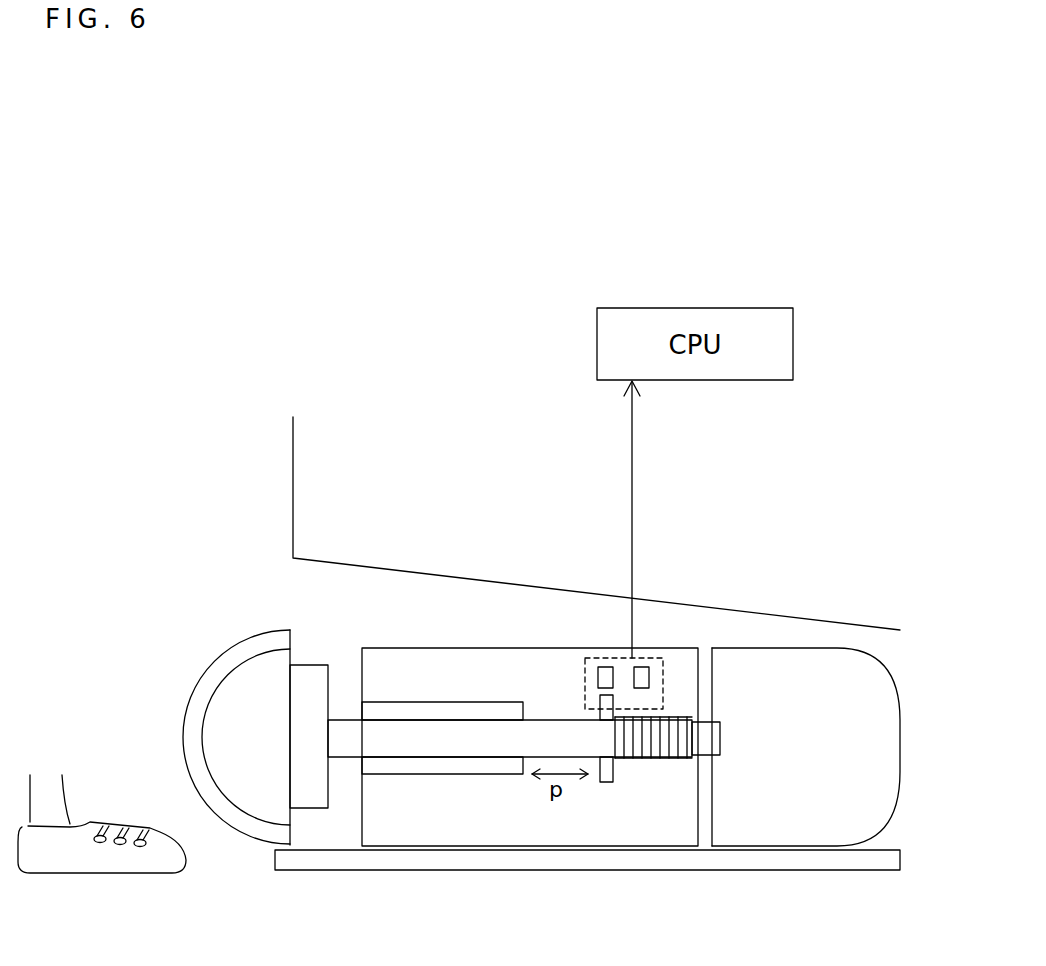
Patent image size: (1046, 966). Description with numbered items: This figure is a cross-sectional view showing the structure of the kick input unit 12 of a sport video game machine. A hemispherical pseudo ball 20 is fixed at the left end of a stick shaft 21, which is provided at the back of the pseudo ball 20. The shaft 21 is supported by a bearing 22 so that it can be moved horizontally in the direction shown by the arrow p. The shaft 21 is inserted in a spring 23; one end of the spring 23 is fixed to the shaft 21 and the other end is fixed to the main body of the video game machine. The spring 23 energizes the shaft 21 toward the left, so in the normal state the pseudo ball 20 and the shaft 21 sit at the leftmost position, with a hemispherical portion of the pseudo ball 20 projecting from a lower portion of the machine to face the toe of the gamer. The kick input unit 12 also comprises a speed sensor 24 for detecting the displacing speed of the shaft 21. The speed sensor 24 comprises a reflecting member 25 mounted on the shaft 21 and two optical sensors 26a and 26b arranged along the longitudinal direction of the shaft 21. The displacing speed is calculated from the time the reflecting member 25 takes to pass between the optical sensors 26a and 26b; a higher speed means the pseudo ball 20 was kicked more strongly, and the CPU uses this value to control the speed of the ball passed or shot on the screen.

The kick input unit 12 is at (232, 623).
The pseudo ball 20 is at (200, 683).
The stick shaft 21 is at (390, 737).
The bearing 22 is at (470, 702).
The spring 23 is at (647, 760).
The speed sensor 24 is at (622, 658).
The reflecting member 25 is at (606, 783).
The optical sensor 26a is at (603, 666).
The optical sensor 26b is at (645, 662).